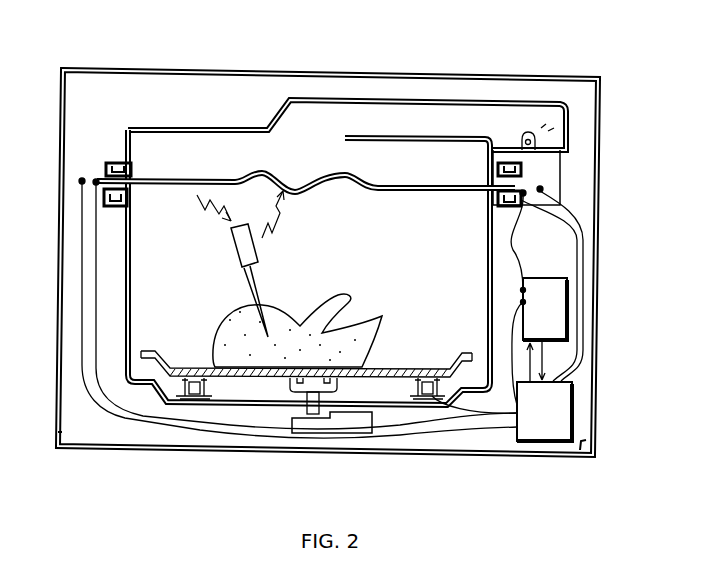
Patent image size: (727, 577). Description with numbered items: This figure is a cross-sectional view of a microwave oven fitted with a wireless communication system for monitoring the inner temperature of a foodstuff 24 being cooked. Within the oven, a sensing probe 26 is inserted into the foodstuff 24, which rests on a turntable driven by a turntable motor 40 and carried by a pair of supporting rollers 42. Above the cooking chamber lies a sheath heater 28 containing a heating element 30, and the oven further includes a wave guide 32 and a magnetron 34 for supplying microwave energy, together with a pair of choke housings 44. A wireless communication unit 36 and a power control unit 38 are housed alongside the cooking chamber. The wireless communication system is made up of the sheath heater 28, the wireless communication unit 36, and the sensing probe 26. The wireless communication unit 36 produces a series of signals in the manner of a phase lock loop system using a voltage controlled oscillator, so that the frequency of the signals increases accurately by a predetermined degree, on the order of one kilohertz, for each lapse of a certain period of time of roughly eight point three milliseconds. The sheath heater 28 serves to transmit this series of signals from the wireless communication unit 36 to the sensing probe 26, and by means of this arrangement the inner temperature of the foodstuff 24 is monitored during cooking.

The foodstuff 24 is at (362, 345).
The sensing probe 26 is at (250, 252).
The sheath heater 28 is at (155, 178).
The heating element 30 is at (215, 183).
The wave guide 32 is at (362, 102).
The magnetron 34 is at (548, 167).
The wireless communication unit 36 is at (553, 301).
The power control unit 38 is at (553, 413).
The turntable motor 40 is at (355, 428).
The supporting rollers 42 is at (197, 398).
The choke housings 44 is at (104, 163).